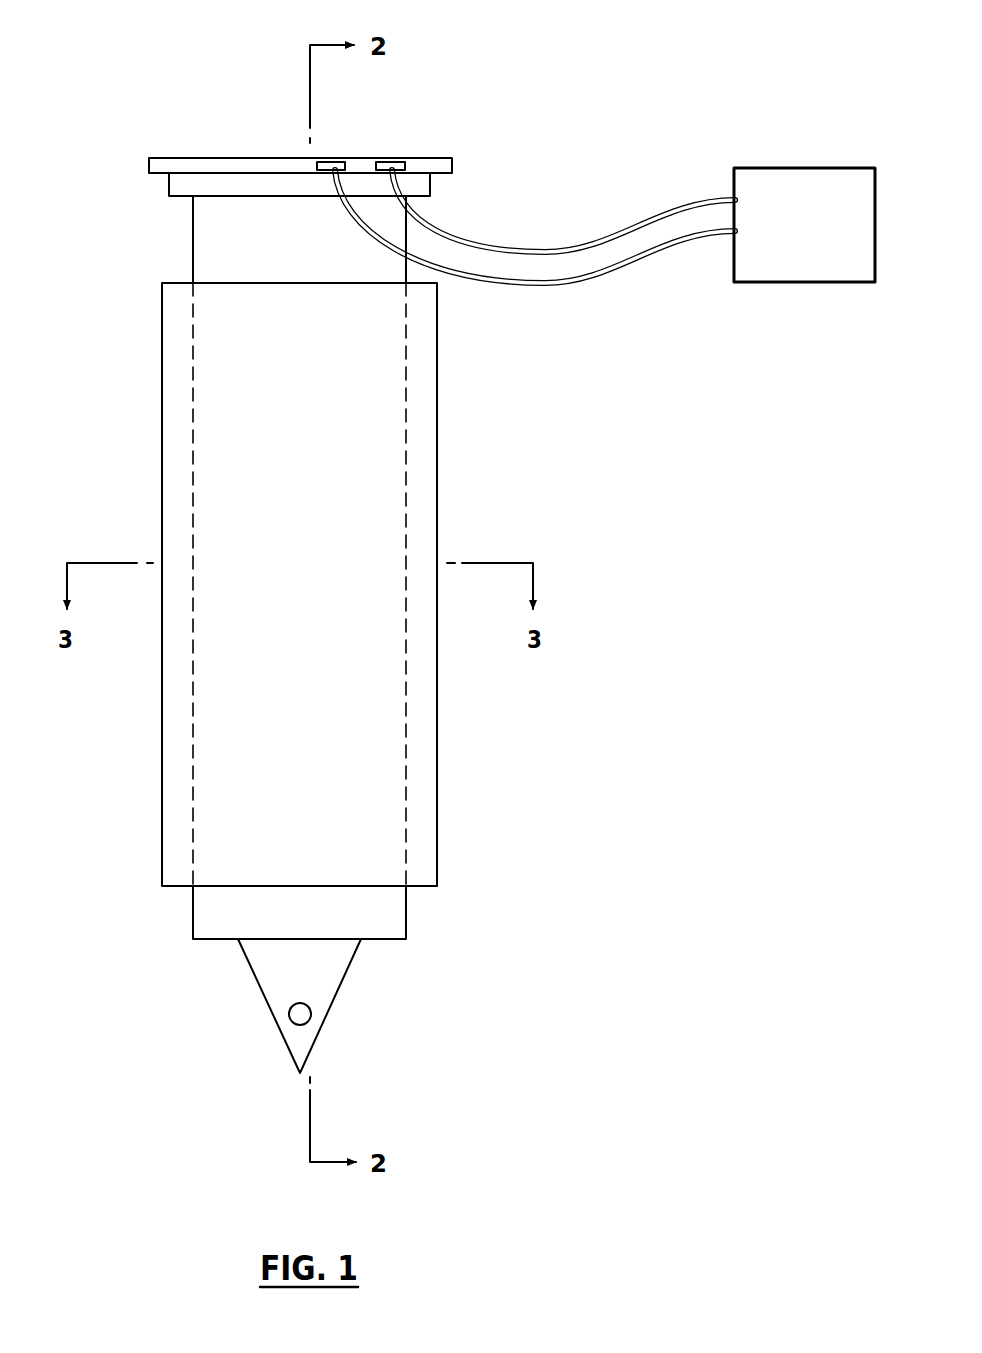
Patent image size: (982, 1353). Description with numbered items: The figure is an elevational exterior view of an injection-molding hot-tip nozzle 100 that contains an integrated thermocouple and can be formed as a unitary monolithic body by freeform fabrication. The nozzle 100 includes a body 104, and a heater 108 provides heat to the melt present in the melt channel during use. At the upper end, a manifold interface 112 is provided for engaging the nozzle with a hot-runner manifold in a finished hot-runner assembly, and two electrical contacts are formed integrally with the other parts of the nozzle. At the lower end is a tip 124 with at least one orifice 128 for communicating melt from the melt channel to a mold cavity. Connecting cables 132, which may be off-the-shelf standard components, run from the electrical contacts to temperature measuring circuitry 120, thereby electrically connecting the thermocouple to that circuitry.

The hot-tip nozzle 100 is at (620, 135).
The body 104 is at (192, 232).
The heater 108 is at (162, 350).
The manifold interface 112 is at (167, 137).
The temperature measuring circuitry 120 is at (790, 282).
The tip 124 is at (280, 1078).
The orifice 128 is at (292, 1014).
The connecting cable 132 is at (569, 308).